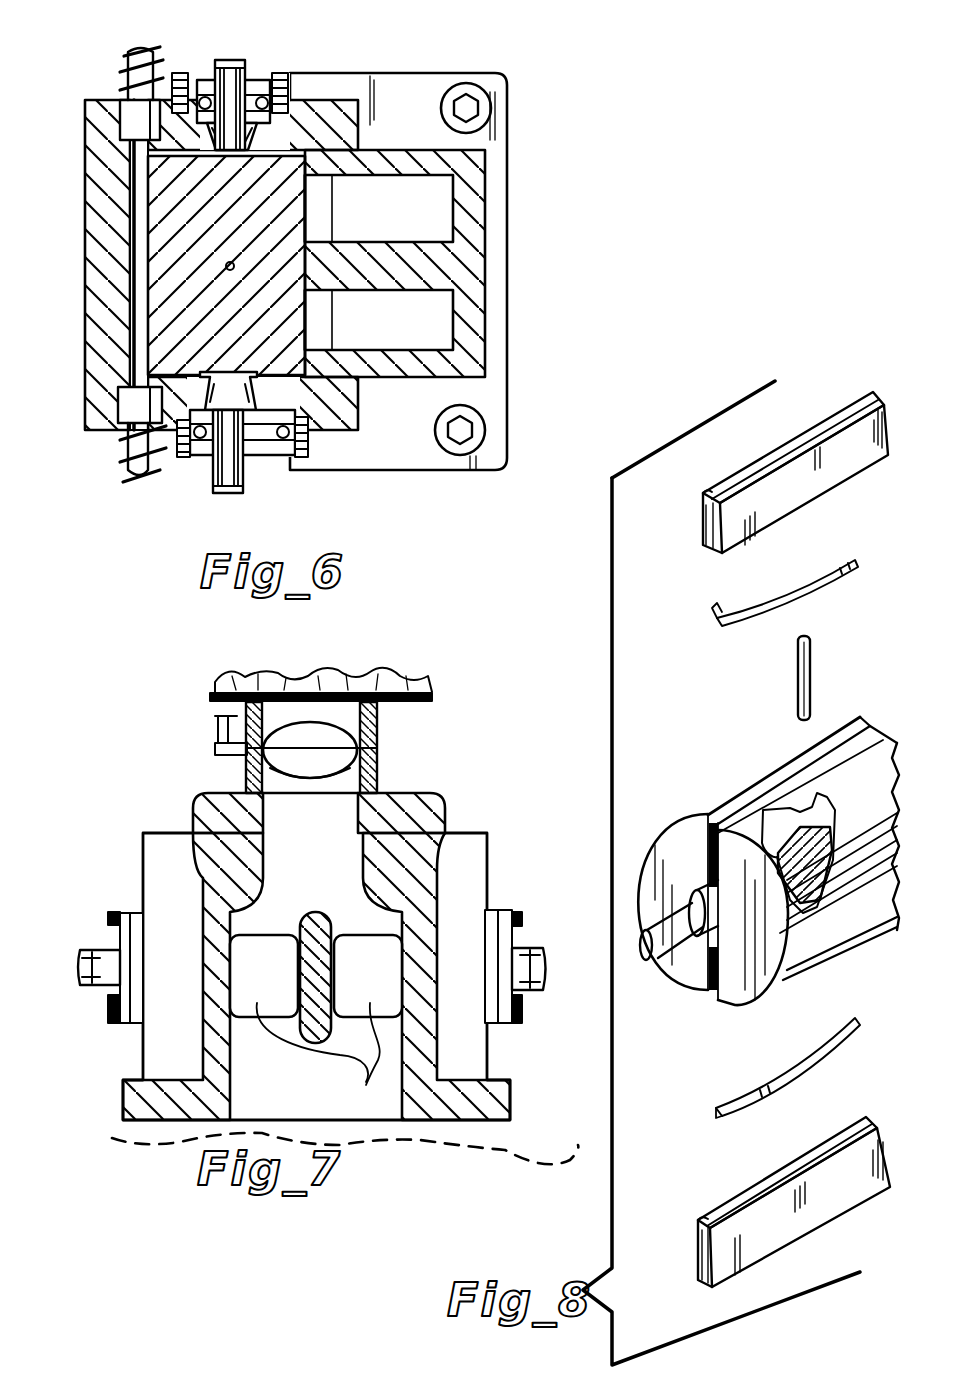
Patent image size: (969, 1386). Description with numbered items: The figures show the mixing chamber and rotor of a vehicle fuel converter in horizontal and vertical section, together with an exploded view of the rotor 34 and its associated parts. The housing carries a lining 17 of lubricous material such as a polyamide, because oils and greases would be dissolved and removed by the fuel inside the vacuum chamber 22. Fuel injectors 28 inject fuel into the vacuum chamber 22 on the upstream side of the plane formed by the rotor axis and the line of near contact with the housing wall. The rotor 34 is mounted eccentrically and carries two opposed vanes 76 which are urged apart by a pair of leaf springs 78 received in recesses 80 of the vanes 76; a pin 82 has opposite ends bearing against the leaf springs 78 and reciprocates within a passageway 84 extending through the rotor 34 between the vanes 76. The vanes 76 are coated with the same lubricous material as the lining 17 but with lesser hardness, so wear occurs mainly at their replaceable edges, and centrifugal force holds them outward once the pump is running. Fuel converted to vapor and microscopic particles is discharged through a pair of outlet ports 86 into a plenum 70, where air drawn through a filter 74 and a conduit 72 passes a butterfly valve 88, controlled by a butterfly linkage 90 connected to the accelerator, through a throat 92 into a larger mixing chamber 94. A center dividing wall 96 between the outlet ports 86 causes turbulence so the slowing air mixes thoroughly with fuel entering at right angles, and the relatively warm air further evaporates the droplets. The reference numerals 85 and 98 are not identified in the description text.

In FIG. 6, the lining 17 is at (292, 163).
In FIG. 6, the vacuum chamber 22 is at (140, 298).
In FIG. 6, the fuel injectors 28 is at (124, 78).
In FIG. 6, the rotor 34 is at (176, 227).
In FIG. 8, the rotor 34 is at (708, 797).
In FIG. 7, the plenum 70 is at (422, 950).
In FIG. 7, the conduit 72 is at (378, 728).
In FIG. 7, the filter 74 is at (380, 682).
In FIG. 8, the vanes 76 is at (790, 470).
In FIG. 8, the leaf springs 78 is at (722, 622).
In FIG. 8, the recesses 80 is at (710, 553).
In FIG. 6, the pin 82 is at (234, 270).
In FIG. 8, the pin 82 is at (808, 665).
In FIG. 8, the passageway 84 is at (803, 833).
In FIG. 8, the tab 85 is at (703, 497).
In FIG. 6, the outlet ports 86 is at (328, 203).
In FIG. 7, the outlet ports 86 is at (318, 1054).
In FIG. 7, the butterfly valve 88 is at (305, 722).
In FIG. 7, the butterfly linkage 90 is at (212, 724).
In FIG. 7, the throat 92 is at (365, 832).
In FIG. 6, the mixing chamber 94 is at (437, 205).
In FIG. 7, the mixing chamber 94 is at (405, 1100).
In FIG. 6, the center dividing wall 96 is at (433, 266).
In FIG. 7, the center dividing wall 96 is at (312, 913).
In FIG. 7, the mounting surface 98 is at (577, 1152).